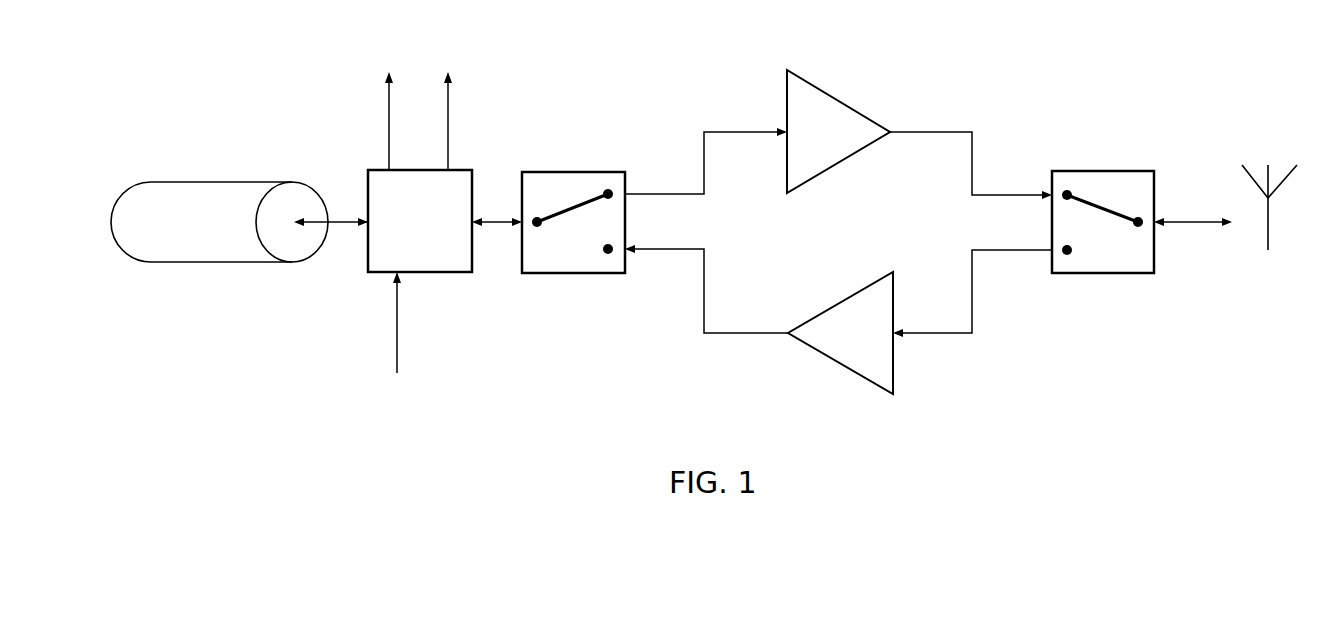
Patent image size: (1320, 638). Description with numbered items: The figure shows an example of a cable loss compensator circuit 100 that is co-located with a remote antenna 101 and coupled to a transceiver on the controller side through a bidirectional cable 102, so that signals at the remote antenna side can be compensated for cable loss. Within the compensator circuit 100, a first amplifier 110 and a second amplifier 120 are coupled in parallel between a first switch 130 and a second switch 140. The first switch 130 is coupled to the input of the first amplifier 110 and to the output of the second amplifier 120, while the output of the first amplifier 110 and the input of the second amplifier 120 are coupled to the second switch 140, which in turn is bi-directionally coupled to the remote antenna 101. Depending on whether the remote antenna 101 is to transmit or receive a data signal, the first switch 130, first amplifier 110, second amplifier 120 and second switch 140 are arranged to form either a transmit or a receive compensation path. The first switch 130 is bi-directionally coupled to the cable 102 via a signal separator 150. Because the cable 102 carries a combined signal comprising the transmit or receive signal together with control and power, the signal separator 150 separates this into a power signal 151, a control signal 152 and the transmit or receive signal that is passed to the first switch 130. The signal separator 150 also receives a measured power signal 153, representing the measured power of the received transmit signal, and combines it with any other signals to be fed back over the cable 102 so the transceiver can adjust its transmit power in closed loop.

The cable loss compensator circuit 100 is at (698, 74).
The remote antenna 101 is at (1268, 165).
The cable 102 is at (218, 264).
The first amplifier 110 is at (858, 88).
The second amplifier 120 is at (838, 368).
The first switch 130 is at (573, 275).
The second switch 140 is at (1098, 275).
The signal separator 150 is at (426, 213).
The power signal 151 is at (387, 122).
The control signal 152 is at (450, 123).
The measured power signal 153 is at (395, 325).